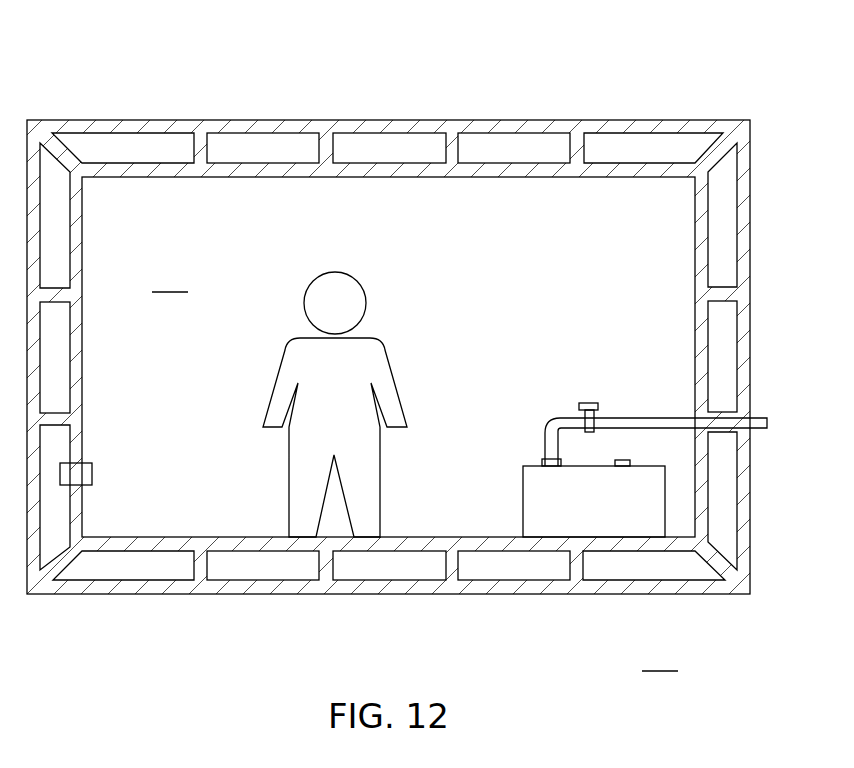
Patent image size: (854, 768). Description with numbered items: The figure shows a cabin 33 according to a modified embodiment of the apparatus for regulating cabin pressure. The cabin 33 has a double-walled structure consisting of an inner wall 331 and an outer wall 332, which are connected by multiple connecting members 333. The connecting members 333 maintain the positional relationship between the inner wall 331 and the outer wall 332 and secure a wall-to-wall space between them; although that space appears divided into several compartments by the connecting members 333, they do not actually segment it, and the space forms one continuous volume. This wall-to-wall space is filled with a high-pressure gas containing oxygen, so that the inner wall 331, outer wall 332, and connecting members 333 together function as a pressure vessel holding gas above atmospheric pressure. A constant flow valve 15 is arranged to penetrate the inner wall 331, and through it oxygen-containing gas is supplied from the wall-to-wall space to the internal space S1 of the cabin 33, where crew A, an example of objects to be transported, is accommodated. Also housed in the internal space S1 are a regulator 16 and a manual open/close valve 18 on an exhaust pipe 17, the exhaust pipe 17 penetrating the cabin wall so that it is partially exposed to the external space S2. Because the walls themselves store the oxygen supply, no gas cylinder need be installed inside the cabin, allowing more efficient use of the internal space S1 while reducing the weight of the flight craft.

The cabin 33 is at (619, 91).
The inner wall 331 is at (477, 178).
The outer wall 332 is at (477, 125).
The connecting member 333 is at (200, 153).
The constant flow valve 15 is at (77, 474).
The regulator 16 is at (538, 506).
The exhaust pipe 17 is at (552, 423).
The manual open/close valve 18 is at (591, 403).
The crew A is at (373, 358).
The internal space S1 is at (170, 279).
The external space S2 is at (660, 658).